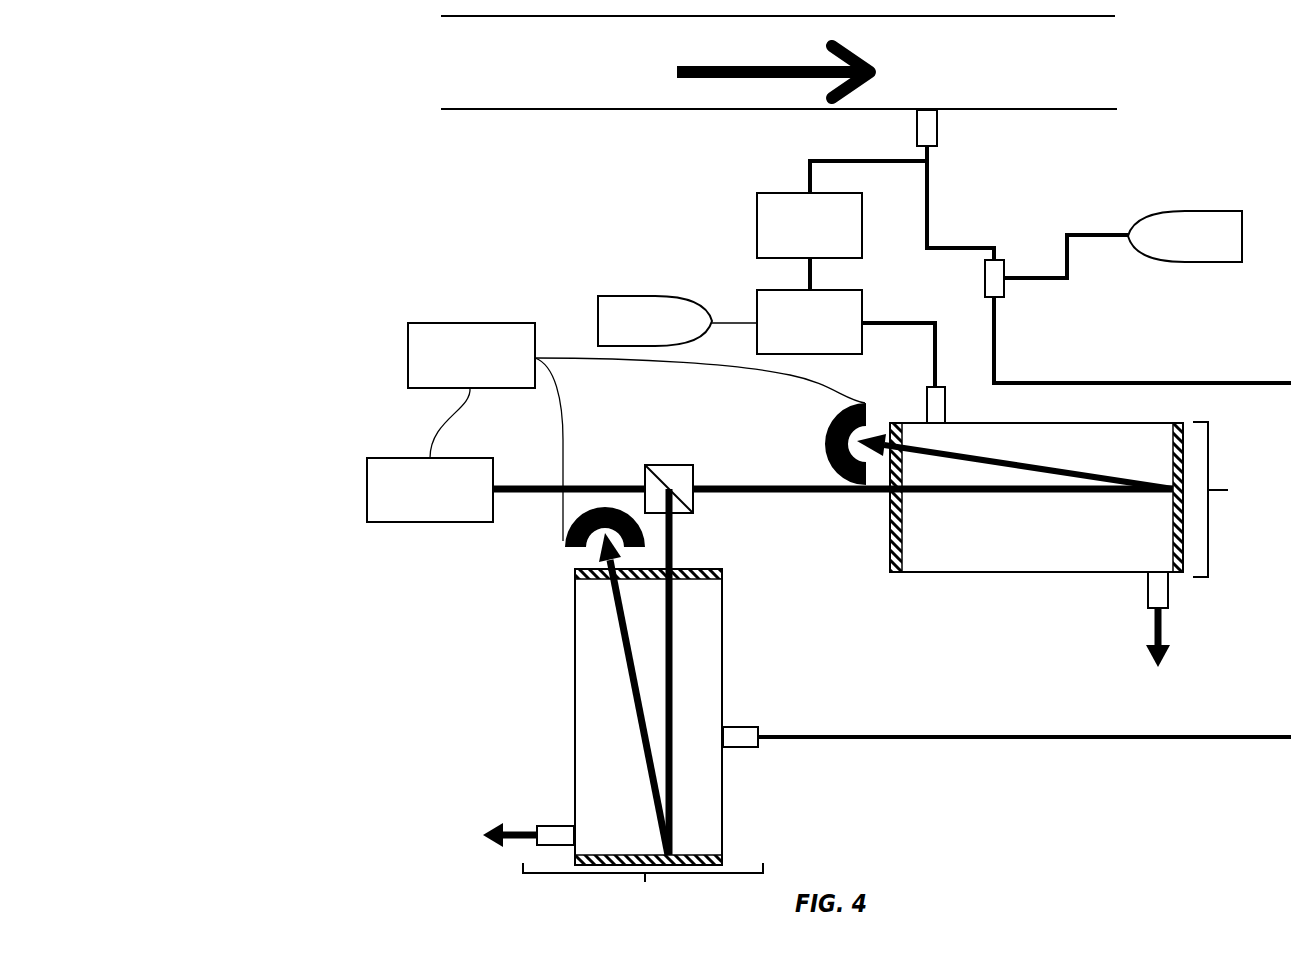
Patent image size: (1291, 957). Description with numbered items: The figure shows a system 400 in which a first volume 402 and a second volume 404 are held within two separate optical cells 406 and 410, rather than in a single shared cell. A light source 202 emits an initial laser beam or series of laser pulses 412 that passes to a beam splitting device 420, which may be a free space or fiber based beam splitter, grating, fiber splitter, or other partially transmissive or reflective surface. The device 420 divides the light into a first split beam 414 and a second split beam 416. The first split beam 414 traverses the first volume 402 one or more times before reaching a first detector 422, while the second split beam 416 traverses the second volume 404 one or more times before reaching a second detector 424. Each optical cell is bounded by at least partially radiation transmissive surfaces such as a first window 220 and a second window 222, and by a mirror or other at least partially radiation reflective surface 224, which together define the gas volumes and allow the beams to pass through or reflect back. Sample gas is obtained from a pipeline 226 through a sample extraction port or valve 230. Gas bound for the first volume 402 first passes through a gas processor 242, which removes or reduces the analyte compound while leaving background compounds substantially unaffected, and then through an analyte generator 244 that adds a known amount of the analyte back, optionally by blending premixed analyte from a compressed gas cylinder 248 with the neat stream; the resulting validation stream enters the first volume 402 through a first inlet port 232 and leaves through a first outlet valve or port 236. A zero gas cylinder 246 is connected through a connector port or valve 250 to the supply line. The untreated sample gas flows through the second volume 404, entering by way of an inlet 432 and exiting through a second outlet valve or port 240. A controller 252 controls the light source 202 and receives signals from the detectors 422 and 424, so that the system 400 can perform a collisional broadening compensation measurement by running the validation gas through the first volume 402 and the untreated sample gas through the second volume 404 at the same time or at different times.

The system 400 is at (284, 96).
The pipeline 226 is at (779, 62).
The sample extraction port or valve 230 is at (941, 130).
The gas processor 242 is at (809, 225).
The analyte generator 244 is at (809, 322).
The cylinder 246 is at (1185, 236).
The compressed gas cylinder 248 is at (677, 321).
The connector port or valve 250 is at (1003, 256).
The controller 252 is at (636, 432).
The light source 202 is at (430, 490).
The first inlet port 232 is at (923, 409).
The initial laser beam or series of laser pulses 412 is at (521, 484).
The beam splitting device 420 is at (668, 461).
The first detector 422 is at (825, 443).
The second detector 424 is at (561, 548).
The first volume 402 is at (1036, 497).
The second volume 404 is at (648, 717).
The first window 220 is at (726, 573).
The second window 222 is at (1184, 578).
The mirror 224 is at (726, 860).
The first split beam 414 is at (966, 463).
The second split beam 416 is at (663, 663).
The first outlet valve or port 236 is at (1144, 598).
The second outlet valve or port 240 is at (556, 822).
The inlet 432 is at (741, 751).
The first optical cell 406 is at (1233, 499).
The second optical cell 410 is at (643, 889).